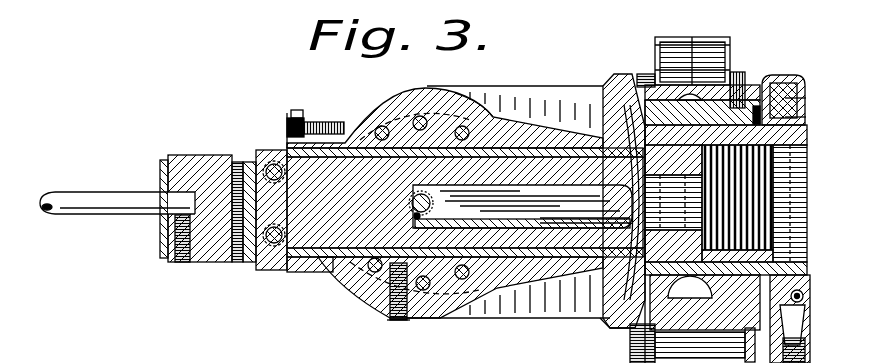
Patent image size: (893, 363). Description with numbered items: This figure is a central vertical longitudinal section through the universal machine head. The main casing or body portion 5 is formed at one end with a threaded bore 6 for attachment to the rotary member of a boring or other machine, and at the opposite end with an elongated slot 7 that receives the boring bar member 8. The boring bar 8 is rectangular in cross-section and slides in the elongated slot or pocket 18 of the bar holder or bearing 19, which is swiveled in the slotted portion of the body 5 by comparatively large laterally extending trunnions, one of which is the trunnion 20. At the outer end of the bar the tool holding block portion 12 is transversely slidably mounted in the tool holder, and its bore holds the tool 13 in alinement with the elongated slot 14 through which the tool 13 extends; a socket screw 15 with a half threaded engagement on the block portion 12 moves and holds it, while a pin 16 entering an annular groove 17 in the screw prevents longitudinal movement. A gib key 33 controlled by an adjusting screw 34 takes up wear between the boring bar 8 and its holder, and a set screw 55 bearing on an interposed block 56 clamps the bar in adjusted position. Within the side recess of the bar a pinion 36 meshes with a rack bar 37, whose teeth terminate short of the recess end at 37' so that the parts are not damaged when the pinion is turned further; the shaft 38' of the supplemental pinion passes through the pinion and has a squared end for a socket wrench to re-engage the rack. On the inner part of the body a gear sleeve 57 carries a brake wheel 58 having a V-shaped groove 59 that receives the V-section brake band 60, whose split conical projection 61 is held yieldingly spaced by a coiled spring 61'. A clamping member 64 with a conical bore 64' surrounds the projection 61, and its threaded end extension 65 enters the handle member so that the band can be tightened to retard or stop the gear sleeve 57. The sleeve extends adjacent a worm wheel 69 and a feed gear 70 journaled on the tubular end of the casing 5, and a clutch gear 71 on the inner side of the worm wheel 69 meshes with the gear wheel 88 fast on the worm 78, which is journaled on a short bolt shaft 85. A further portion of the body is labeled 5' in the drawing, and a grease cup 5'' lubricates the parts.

The main casing or body portion 5 is at (622, 186).
The flange strip 5' is at (737, 258).
The grease cup 5'' is at (585, 334).
The threaded bore 6 is at (770, 228).
The elongated slot 7 is at (578, 92).
The boring bar member 8 is at (310, 250).
The tool holding block portion 12 is at (199, 137).
The tool 13 is at (128, 214).
The elongated slot 14 is at (160, 230).
The socket screw 15 is at (248, 264).
The pin 16 is at (283, 188).
The annular groove 17 is at (237, 263).
The elongated slot or pocket 18 is at (537, 270).
The bar holder or bearing 19 is at (477, 105).
The trunnion 20 is at (388, 113).
The gib key 33 is at (300, 110).
The adjusting screw 34 is at (287, 125).
The pinion 36 is at (410, 200).
The rack bar 37 is at (522, 206).
The terminating portion of rack teeth 37' is at (585, 209).
The shaft 38' is at (395, 214).
The set screw 55 is at (405, 320).
The interposed block 56 is at (392, 266).
The gear sleeve 57 is at (757, 105).
The brake wheel 58 is at (800, 117).
The V-shaped groove 59 is at (800, 98).
The brake band 60 is at (782, 75).
The conical shaped projection 61 is at (799, 316).
The coiled spring 61' is at (769, 301).
The clamping member 64 is at (705, 339).
The conical bore 64' is at (806, 325).
The threaded end extension 65 is at (805, 352).
The worm wheel 69 is at (660, 262).
The feed gear 70 is at (645, 112).
The clutch gear 71 is at (740, 72).
The worm 78 is at (692, 38).
The short bolt shaft 85 is at (638, 74).
The gear wheel 88 is at (722, 38).